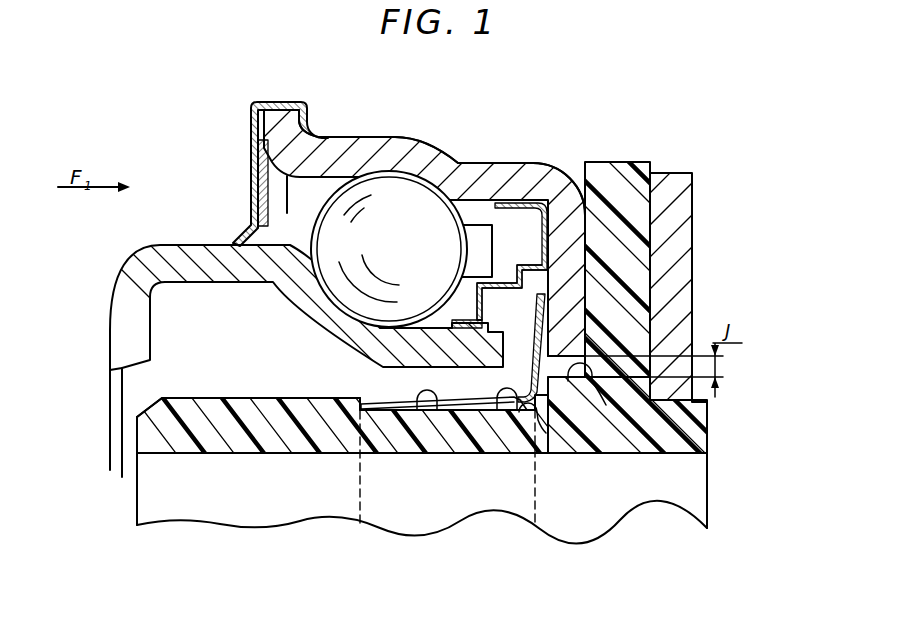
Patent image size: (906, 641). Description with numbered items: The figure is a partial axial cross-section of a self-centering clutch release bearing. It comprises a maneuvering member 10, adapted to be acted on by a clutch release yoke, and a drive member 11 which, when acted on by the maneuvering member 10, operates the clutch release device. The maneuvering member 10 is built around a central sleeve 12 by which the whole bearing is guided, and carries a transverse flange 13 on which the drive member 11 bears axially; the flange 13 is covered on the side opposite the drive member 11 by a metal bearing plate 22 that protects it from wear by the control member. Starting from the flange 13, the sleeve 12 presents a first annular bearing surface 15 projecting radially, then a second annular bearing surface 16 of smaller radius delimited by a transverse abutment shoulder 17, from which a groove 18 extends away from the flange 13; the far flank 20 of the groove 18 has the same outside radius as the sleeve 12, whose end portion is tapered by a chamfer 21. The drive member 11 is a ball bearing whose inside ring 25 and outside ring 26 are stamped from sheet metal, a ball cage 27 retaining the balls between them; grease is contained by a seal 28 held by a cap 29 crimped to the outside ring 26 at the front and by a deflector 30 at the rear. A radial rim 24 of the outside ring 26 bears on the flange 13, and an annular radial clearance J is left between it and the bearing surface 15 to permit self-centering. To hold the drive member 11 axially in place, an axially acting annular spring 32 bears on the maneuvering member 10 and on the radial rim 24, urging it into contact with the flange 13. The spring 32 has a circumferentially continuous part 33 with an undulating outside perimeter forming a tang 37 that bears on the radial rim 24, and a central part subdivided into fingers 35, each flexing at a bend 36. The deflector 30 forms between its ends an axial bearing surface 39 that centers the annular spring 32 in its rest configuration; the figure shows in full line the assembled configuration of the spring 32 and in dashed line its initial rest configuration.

The first member 10 is at (713, 275).
The second member 11 is at (350, 120).
The central sleeve 12 is at (268, 398).
The transverse flange 13 is at (610, 161).
The first annular bearing surface 15 is at (598, 378).
The second annular bearing surface 16 is at (596, 386).
The transverse shoulder 17 is at (538, 421).
The groove 18 is at (441, 410).
The flank 20 is at (363, 400).
The chamfer 21 is at (162, 397).
The bearing plate 22 is at (682, 173).
The radial rim 24 is at (568, 238).
The inside ring 25 is at (305, 318).
The outside ring 26 is at (392, 143).
The ball cage 27 is at (473, 233).
The seal 28 is at (260, 185).
The cap 29 is at (256, 101).
The deflector 30 is at (532, 256).
The annular spring 32 is at (586, 328).
The circumferentially continuous part 33 is at (528, 346).
The fingers 35 is at (420, 408).
The bend 36 is at (507, 412).
The tang 37 is at (546, 308).
The axial bearing surface 39 is at (503, 296).